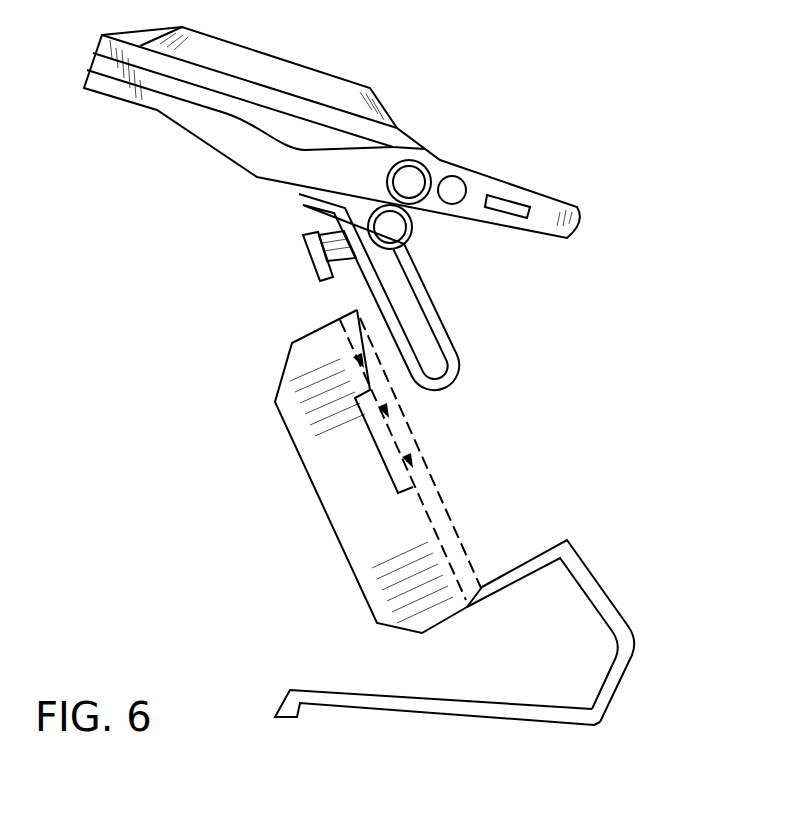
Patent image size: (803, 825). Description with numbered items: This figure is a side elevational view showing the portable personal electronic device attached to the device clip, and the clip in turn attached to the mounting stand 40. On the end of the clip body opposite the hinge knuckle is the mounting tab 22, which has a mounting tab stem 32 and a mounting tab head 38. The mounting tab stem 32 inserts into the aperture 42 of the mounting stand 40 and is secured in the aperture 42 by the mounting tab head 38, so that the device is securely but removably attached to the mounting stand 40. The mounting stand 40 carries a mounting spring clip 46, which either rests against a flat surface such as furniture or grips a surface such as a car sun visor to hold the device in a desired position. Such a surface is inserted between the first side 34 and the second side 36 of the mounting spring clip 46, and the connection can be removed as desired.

The mounting tab 22 is at (301, 250).
The mounting tab stem 32 is at (323, 229).
The first side 34 is at (600, 724).
The second side 36 is at (584, 560).
The mounting tab head 38 is at (315, 272).
The mounting stand 40 is at (556, 436).
The aperture 42 is at (387, 442).
The mounting spring clip 46 is at (308, 642).